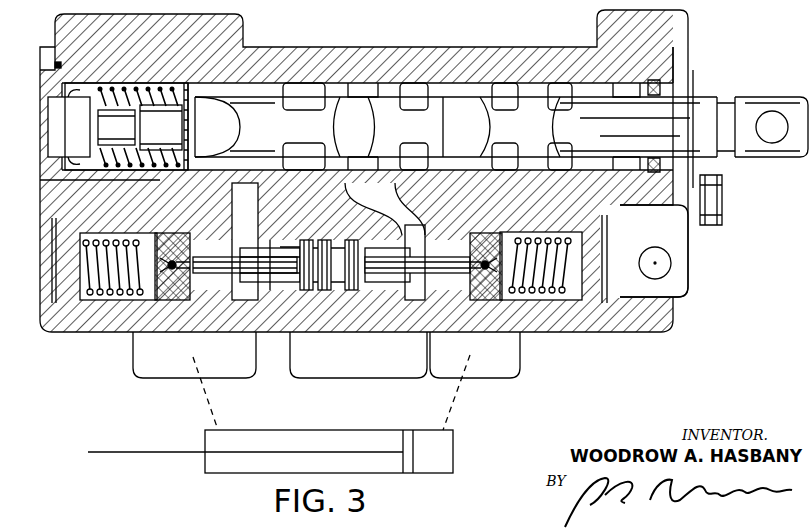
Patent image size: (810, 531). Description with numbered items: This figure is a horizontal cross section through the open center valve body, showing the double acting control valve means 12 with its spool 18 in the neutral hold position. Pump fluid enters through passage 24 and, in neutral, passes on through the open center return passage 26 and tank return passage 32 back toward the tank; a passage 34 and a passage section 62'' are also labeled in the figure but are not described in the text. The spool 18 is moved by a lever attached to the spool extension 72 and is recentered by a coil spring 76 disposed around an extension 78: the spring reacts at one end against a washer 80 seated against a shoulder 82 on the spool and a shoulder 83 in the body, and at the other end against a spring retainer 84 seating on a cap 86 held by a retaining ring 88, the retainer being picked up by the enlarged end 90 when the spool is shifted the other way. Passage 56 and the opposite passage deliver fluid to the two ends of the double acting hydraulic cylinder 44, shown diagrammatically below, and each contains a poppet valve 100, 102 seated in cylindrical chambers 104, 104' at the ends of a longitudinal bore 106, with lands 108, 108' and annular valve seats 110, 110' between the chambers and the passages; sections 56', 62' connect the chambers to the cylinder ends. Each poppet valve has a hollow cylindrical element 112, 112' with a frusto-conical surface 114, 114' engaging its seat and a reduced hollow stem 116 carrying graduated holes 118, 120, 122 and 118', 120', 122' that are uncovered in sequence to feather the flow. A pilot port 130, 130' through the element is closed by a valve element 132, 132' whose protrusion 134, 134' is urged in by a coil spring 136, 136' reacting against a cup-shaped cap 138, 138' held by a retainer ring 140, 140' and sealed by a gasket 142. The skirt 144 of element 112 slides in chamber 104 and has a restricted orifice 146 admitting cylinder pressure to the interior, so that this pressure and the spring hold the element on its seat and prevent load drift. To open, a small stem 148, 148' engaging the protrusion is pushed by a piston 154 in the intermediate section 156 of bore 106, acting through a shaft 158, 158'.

The double acting control valve means 12 is at (722, 177).
The spool 18 is at (647, 136).
The passage 24 is at (300, 90).
The open center fluid return passage 26 is at (550, 90).
The tank return passage 32 is at (412, 90).
The seal 34 is at (498, 90).
The double acting hydraulic cylinder 44 is at (279, 414).
The passage 56 is at (385, 209).
The passage section 56' is at (499, 339).
The passage section 62' is at (246, 191).
The port 62'' is at (172, 331).
The spool extension 72 is at (792, 105).
The coil spring 76 is at (167, 90).
The extension 78 is at (152, 136).
The washer 80 is at (232, 110).
The shoulder 82 is at (232, 141).
The shoulder 83 is at (195, 90).
The spring retainer 84 is at (64, 136).
The cap 86 is at (48, 78).
The retaining ring 88 is at (62, 62).
The enlarged end 90 is at (98, 128).
The poppet valve 100 is at (557, 360).
The poppet valve 102 is at (103, 373).
The cylindrical chamber 104 is at (653, 265).
The cylindrical chamber 104' is at (45, 343).
The longitudinal bore 106 is at (385, 296).
The land 108 is at (444, 317).
The land 108' is at (234, 314).
The annular valve seat 110 is at (448, 204).
The annular valve seat 110' is at (216, 207).
The hollow cylindrical element 112 is at (482, 206).
The hollow cylindrical element 112' is at (163, 207).
The frusto-conically shaped surface 114 is at (453, 339).
The frusto-conically shaped surface 114' is at (221, 331).
The hollow cylindrical stem 116 is at (405, 284).
The hole 118 is at (410, 252).
The hole 118' is at (246, 241).
The hole 120 is at (417, 265).
The hole 120' is at (245, 265).
The hole 122 is at (409, 308).
The hole 122' is at (273, 306).
The port 130 is at (481, 301).
The port 130' is at (190, 219).
The valve element 132 is at (558, 218).
The valve element 132' is at (141, 219).
The protrusion 134 is at (523, 314).
The protrusion 134' is at (134, 312).
The coil spring 136 is at (544, 281).
The coil spring 136' is at (118, 241).
The cup-shaped cap 138 is at (627, 234).
The cup-shaped cap 138' is at (88, 327).
The retainer ring 140 is at (634, 290).
The retainer ring 140' is at (83, 210).
The gasket 142 is at (597, 314).
The skirt 144 is at (538, 228).
The restricted orifice 146 is at (498, 235).
The small stem 148 is at (486, 266).
The small stem 148' is at (174, 266).
The piston 154 is at (318, 240).
The intermediate section 156 is at (283, 247).
The shaft 158 is at (387, 259).
The shaft 158' is at (270, 274).